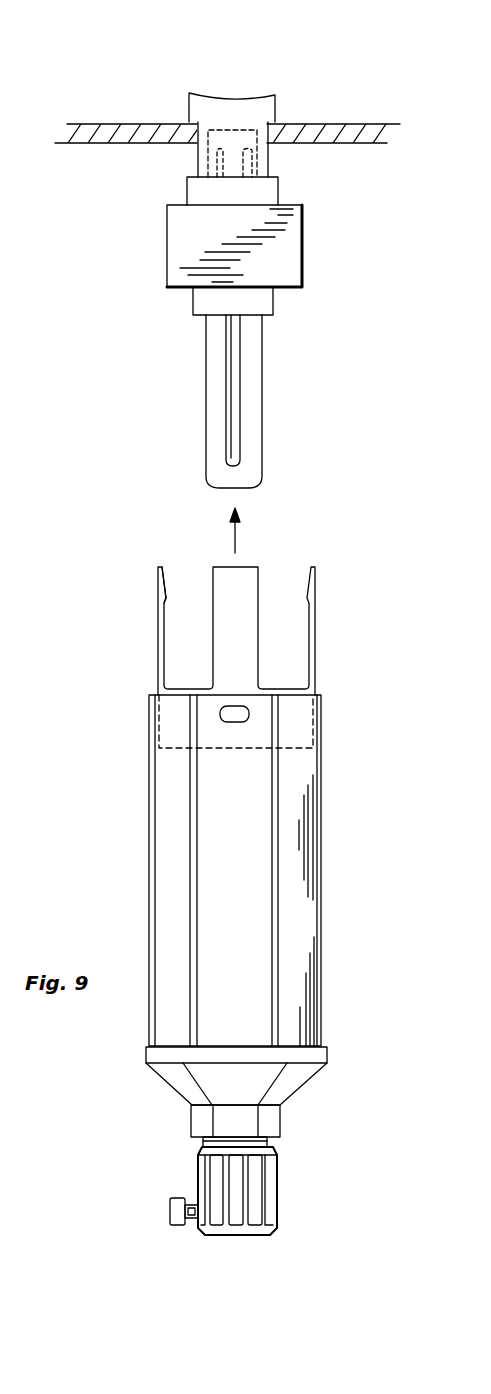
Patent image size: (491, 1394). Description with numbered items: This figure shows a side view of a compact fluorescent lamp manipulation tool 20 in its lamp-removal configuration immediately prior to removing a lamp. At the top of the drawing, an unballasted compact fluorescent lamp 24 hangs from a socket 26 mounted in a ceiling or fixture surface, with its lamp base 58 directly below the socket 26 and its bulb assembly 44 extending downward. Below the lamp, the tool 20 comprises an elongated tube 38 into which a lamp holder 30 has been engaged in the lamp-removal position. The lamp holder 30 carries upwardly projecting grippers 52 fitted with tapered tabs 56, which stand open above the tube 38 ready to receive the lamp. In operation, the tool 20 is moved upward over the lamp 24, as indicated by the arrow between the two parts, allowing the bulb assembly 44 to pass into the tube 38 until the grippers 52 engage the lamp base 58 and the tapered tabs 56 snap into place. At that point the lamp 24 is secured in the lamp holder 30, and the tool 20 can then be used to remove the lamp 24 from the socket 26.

The tool 20 is at (240, 879).
The compact fluorescent lamp 24 is at (230, 305).
The socket 26 is at (202, 112).
The lamp holder 30 is at (232, 609).
The tube 38 is at (217, 843).
The bulb assembly 44 is at (206, 387).
The grippers 52 is at (158, 648).
The tapered tabs 56 is at (166, 582).
The lamp base 58 is at (170, 248).